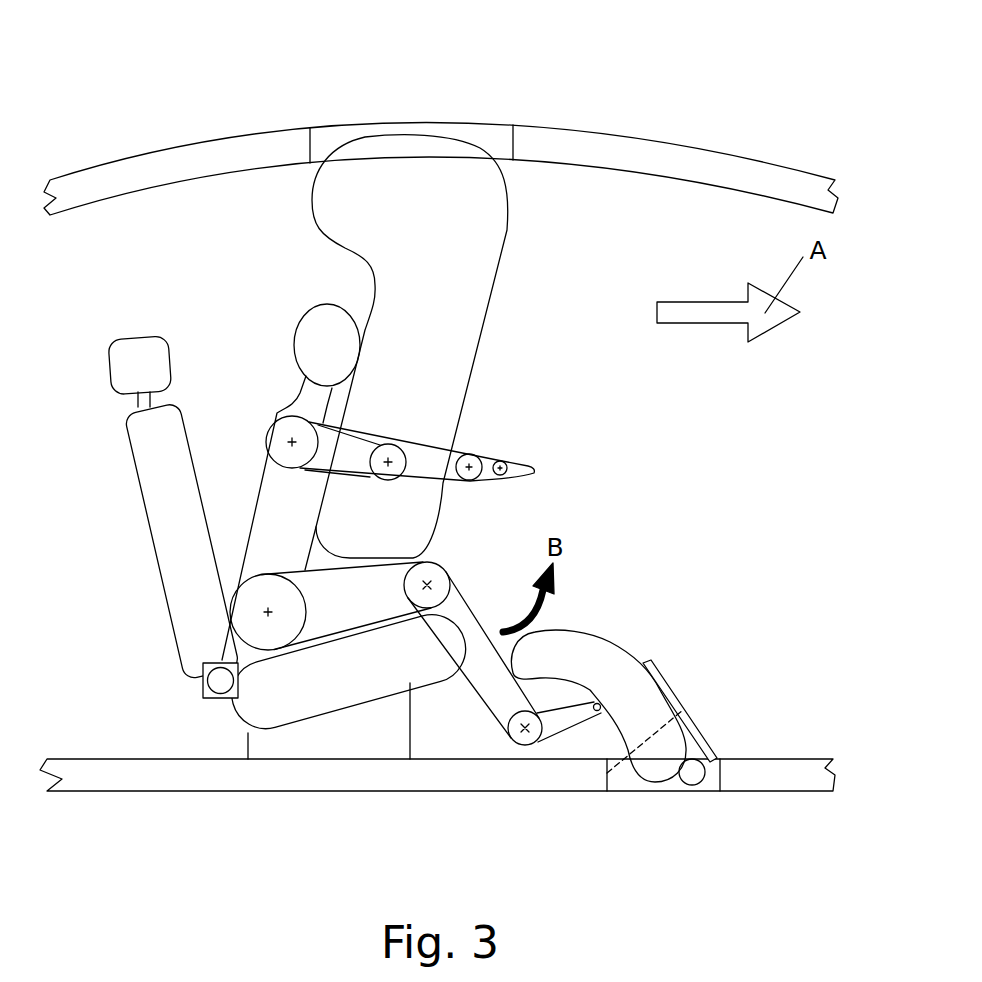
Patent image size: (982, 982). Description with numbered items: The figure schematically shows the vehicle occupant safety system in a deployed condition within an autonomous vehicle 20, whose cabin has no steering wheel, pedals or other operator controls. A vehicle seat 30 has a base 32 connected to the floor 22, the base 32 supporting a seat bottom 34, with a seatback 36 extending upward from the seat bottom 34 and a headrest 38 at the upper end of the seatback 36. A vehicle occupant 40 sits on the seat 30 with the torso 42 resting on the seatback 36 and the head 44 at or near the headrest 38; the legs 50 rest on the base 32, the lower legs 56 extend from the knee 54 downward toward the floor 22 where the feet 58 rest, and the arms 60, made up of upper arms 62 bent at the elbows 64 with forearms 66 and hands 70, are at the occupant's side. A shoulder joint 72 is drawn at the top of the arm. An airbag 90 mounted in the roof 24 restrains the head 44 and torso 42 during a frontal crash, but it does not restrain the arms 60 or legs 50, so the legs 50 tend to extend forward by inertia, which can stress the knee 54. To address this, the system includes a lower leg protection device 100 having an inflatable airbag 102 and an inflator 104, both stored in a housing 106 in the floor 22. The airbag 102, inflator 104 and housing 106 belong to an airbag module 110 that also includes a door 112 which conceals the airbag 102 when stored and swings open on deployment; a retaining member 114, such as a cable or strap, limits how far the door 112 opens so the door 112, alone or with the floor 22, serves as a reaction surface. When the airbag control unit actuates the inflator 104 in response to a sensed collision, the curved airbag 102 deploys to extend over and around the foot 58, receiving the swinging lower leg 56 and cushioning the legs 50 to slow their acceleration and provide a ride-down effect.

The autonomous vehicle 20 is at (144, 113).
The floor 22 is at (432, 772).
The roof 24 is at (560, 153).
The vehicle seat 30 is at (153, 730).
The base 32 is at (367, 742).
The seat bottom 34 is at (323, 700).
The seatback 36 is at (190, 562).
The headrest 38 is at (123, 378).
The vehicle occupant 40 is at (227, 388).
The torso 42 is at (270, 487).
The head 44 is at (308, 338).
The legs 50 is at (340, 623).
The knee 54 is at (433, 577).
The lower legs 56 is at (470, 657).
The feet 58 is at (560, 723).
The arms 60 is at (340, 448).
The upper arms 62 is at (350, 467).
The elbows 64 is at (387, 477).
The forearms 66 is at (433, 472).
The hands 70 is at (510, 468).
The shoulder joint 72 is at (293, 438).
The airbag 90 is at (468, 267).
The lower leg protection device 100 is at (681, 614).
The inflatable airbag 102 is at (590, 657).
The inflator 104 is at (693, 773).
The housing 106 is at (623, 780).
The airbag module 110 is at (671, 817).
The door 112 is at (690, 723).
The retaining member 114 is at (648, 773).